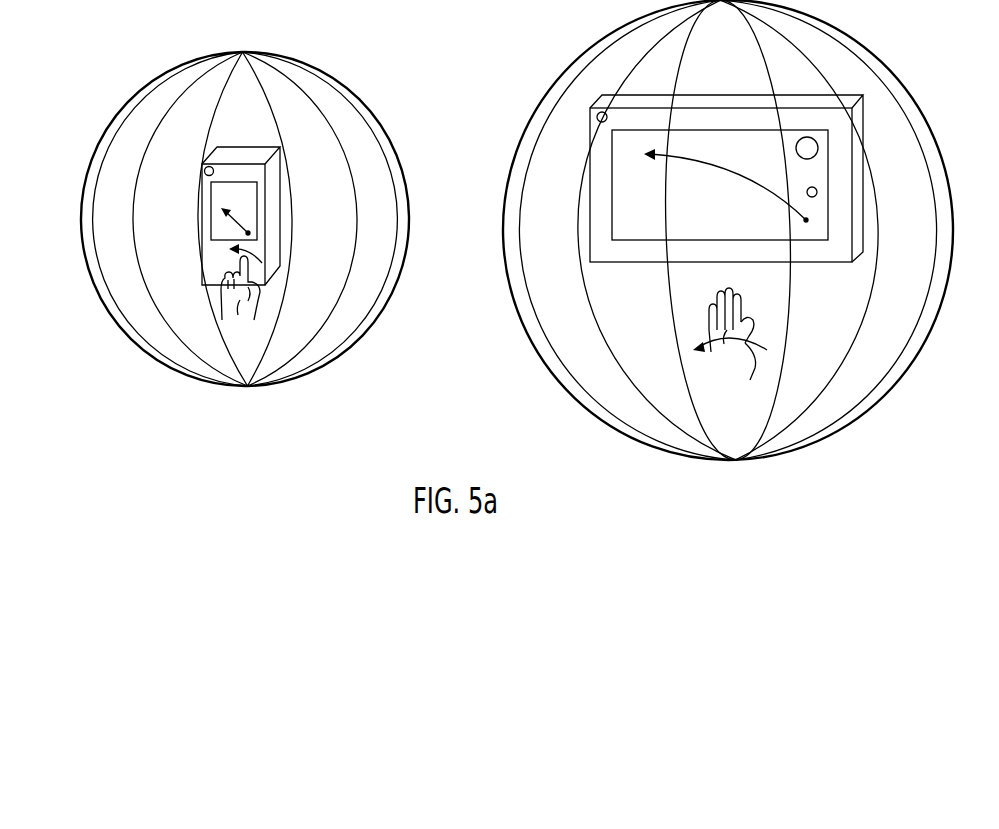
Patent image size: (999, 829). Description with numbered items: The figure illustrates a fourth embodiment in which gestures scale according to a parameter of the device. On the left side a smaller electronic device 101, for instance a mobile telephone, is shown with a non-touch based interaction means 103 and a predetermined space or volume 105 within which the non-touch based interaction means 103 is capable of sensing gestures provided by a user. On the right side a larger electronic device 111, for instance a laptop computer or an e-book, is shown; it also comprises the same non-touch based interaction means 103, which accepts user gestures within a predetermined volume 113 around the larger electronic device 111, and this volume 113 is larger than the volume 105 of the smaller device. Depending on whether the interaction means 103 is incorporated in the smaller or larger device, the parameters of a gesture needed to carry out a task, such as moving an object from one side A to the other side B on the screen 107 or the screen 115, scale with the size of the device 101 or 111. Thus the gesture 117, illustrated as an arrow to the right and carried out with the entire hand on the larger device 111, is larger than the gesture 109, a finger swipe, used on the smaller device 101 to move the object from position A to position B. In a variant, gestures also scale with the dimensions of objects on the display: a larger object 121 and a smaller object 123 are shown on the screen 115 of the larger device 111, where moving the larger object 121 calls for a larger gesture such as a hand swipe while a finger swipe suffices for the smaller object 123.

The smaller electronic device 101 is at (245, 132).
The non-touch based interaction means 103 is at (204, 169).
The predetermined space or volume 105 is at (128, 93).
The screen 107 is at (253, 202).
The gesture 109 is at (270, 253).
The larger electronic device 111 is at (673, 272).
The predetermined volume 113 is at (901, 78).
The screen 115 is at (622, 200).
The gesture 117 is at (753, 348).
The larger object 121 is at (807, 137).
The smaller object 123 is at (818, 194).
The position A is at (250, 233).
The position B is at (218, 206).